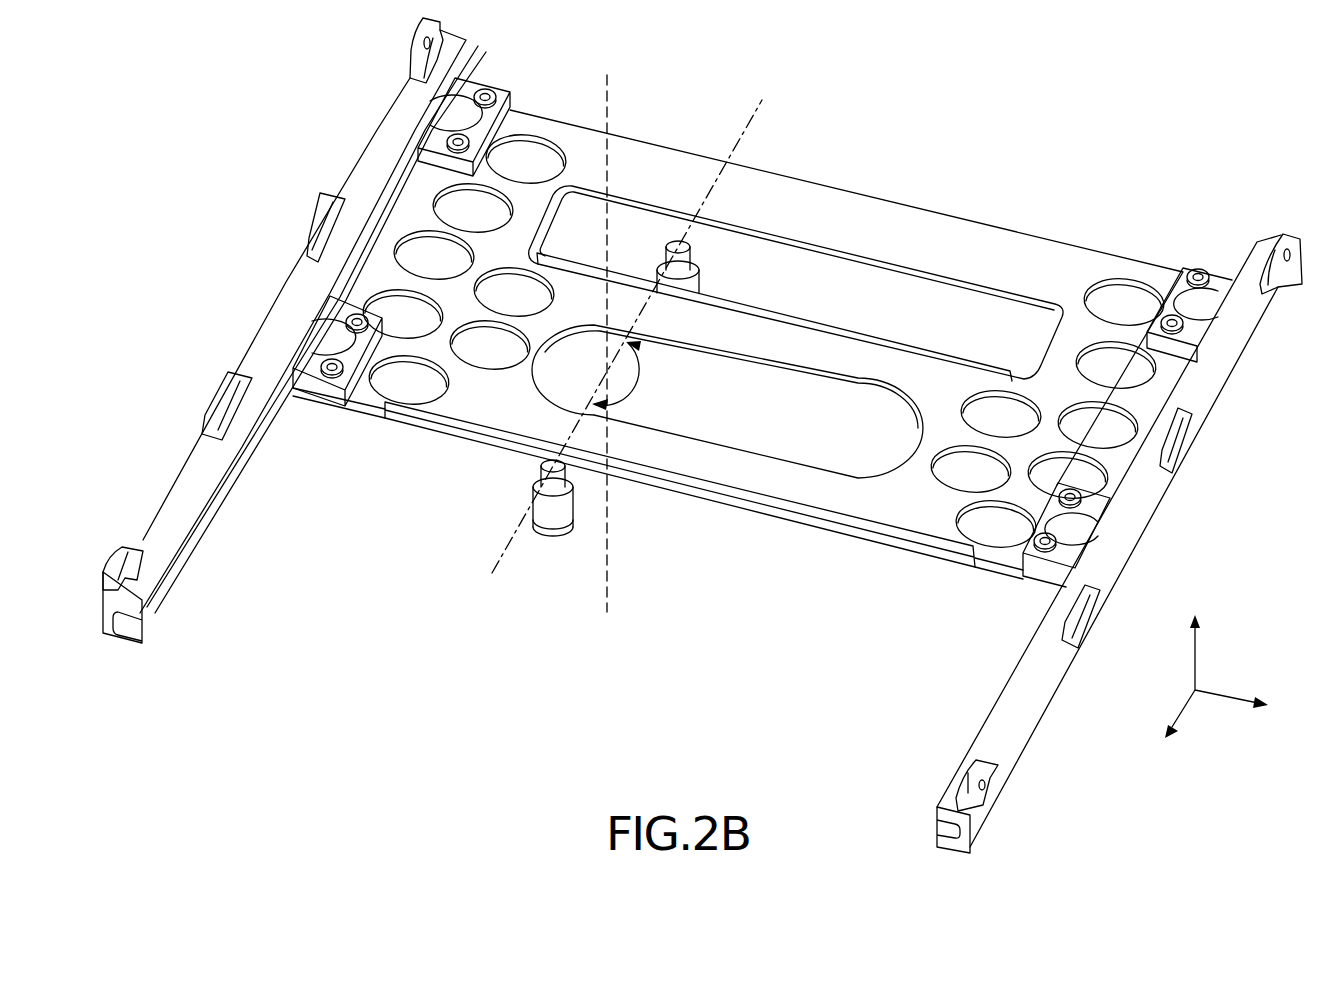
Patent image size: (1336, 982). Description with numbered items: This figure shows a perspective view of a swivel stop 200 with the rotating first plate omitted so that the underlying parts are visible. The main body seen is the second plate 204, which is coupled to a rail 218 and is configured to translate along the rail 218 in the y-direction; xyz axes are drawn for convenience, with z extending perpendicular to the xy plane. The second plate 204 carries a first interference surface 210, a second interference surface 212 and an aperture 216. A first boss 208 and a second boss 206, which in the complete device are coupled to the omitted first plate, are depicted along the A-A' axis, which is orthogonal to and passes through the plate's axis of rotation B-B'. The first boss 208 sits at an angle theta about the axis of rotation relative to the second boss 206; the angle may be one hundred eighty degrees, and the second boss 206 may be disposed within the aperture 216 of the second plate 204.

The swivel stop 200 is at (1086, 139).
The second plate 204 is at (818, 225).
The second boss 206 is at (695, 262).
The first boss 208 is at (553, 518).
The first interference surface 210 is at (752, 505).
The second interference surface 212 is at (979, 371).
The aperture 216 is at (869, 311).
The rail 218 is at (378, 146).